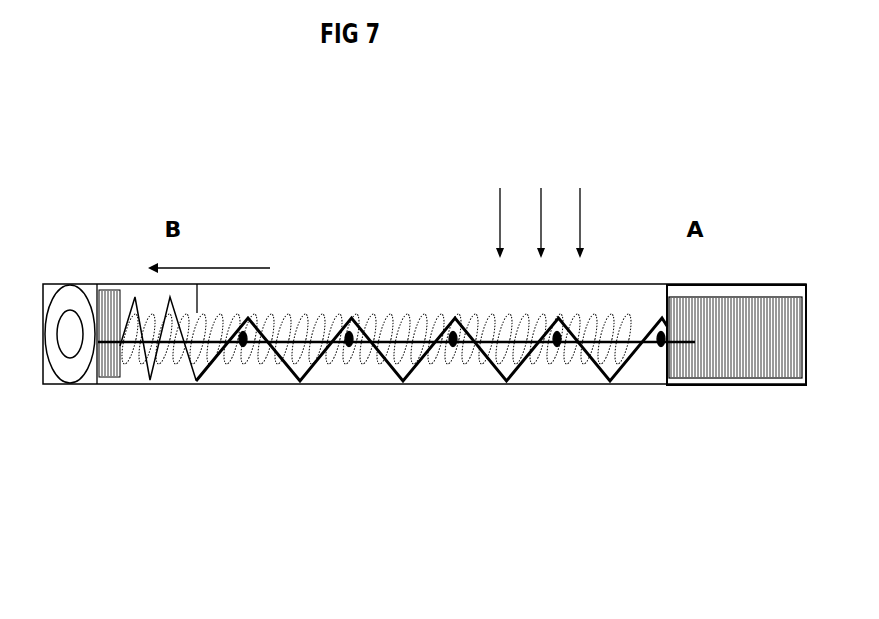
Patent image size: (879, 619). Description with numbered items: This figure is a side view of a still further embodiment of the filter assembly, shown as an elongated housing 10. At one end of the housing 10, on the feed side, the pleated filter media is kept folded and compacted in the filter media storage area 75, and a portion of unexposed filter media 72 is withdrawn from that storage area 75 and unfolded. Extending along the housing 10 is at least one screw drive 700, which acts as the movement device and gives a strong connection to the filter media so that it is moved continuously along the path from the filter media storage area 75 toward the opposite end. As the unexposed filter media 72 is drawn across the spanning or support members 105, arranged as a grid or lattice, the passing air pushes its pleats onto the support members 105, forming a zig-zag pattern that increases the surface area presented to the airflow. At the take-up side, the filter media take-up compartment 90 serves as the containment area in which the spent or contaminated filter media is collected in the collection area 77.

The housing 10 is at (371, 382).
The collection area 77 is at (105, 284).
The screw drive 700 is at (303, 290).
The spanning or support members 105 is at (463, 382).
The unexposed filter media 72 is at (736, 330).
The filter media take-up compartment 90 is at (197, 400).
The filter media storage area 75 is at (693, 395).